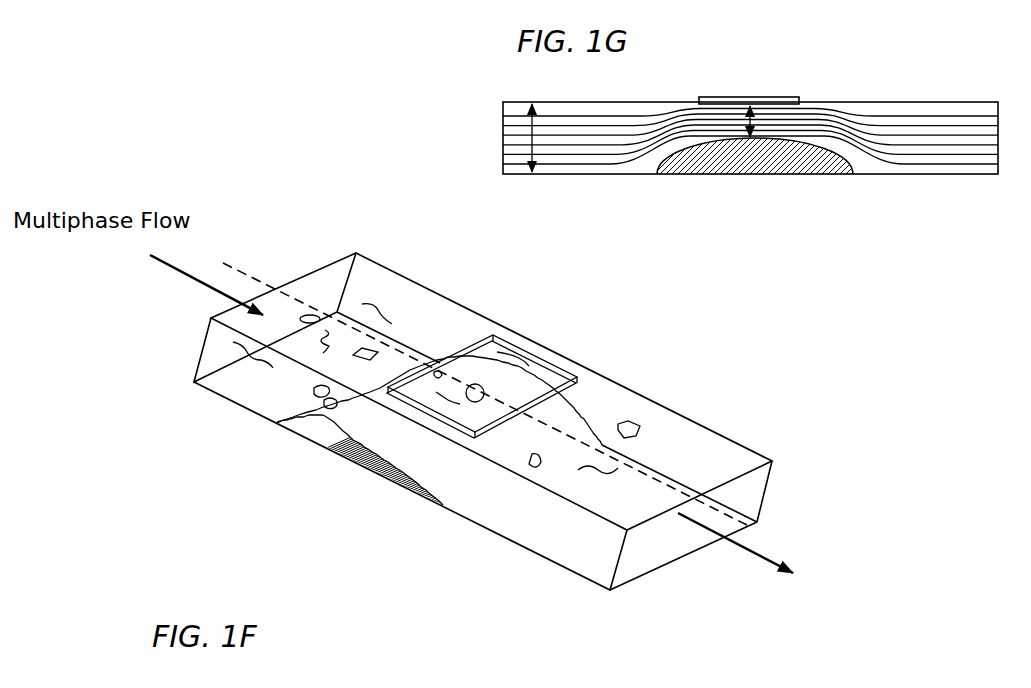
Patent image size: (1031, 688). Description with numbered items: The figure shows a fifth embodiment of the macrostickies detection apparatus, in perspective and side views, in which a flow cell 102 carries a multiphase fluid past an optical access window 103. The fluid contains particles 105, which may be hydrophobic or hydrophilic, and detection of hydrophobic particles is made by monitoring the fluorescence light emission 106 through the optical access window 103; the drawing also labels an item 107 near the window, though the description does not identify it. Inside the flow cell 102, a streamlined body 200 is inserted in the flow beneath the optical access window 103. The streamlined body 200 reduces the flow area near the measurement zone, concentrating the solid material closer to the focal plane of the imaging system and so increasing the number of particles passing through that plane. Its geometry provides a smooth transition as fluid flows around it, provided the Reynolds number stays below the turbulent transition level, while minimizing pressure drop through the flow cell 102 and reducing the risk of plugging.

In FIG. 1F, the flow cell 102 is at (582, 360).
In FIG. 1G, the optical access window 103 is at (748, 85).
In FIG. 1F, the optical access window 103 is at (502, 347).
In FIG. 1F, the particles 105 is at (255, 383).
In FIG. 1F, the fluorescence light emission 106 is at (332, 413).
In FIG. 1F, the bubble 107 is at (475, 404).
In FIG. 1G, the streamlined body 200 is at (753, 178).
In FIG. 1F, the streamlined body 200 is at (347, 452).